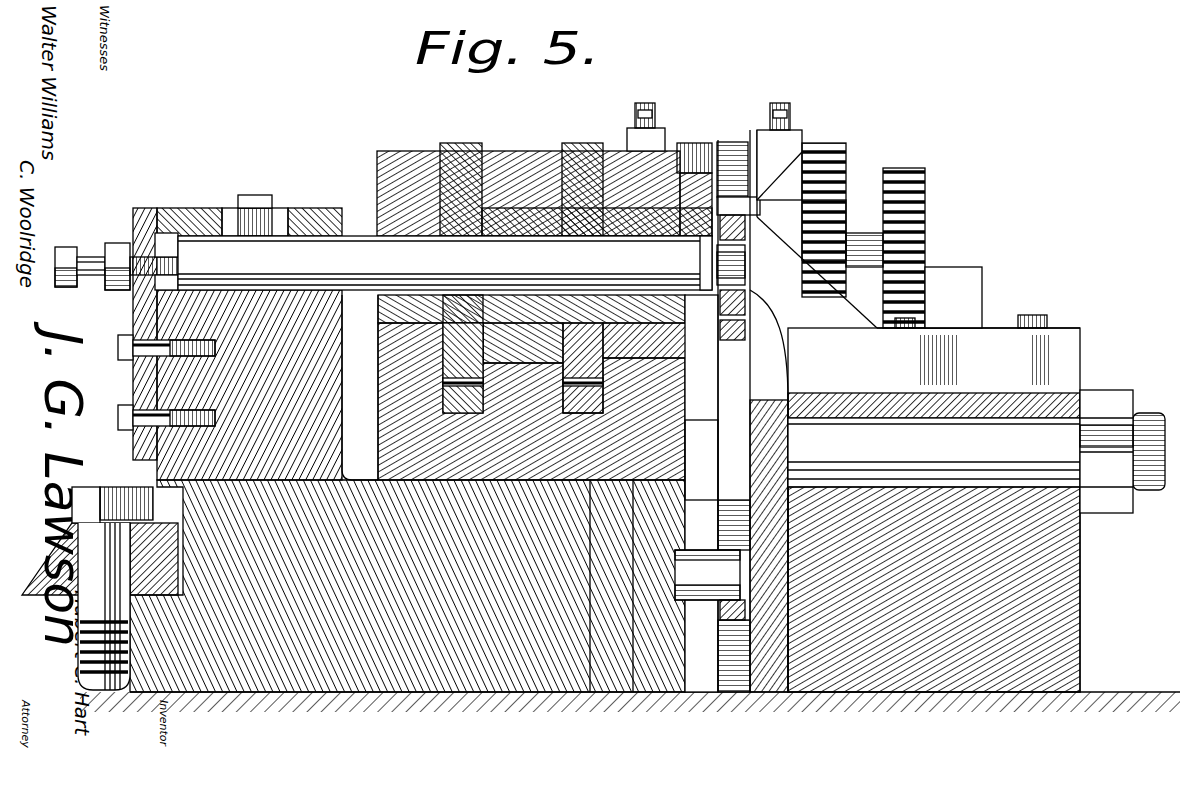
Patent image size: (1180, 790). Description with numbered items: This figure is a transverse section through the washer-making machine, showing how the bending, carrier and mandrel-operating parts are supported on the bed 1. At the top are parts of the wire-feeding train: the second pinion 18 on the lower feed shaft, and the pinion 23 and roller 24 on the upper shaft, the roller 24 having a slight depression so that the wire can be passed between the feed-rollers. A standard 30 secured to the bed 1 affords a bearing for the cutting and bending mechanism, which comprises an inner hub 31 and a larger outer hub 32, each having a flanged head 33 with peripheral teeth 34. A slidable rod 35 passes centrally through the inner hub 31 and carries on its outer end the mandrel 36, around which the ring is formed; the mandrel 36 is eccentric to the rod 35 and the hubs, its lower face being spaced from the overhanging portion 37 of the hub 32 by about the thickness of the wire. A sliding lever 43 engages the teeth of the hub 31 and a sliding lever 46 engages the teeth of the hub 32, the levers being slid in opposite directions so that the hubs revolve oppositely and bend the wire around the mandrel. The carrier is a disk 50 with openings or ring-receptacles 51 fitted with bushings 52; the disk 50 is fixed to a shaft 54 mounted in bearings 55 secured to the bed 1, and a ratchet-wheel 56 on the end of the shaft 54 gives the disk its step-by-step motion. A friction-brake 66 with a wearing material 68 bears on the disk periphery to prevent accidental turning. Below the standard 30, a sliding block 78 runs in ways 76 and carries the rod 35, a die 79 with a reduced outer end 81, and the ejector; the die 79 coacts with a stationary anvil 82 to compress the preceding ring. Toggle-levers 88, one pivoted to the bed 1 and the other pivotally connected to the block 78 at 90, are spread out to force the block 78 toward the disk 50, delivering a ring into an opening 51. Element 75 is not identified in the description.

The bed 1 is at (572, 694).
The second pinion 18 is at (866, 240).
The pinion 23 is at (849, 162).
The roller 24 is at (730, 140).
The standard 30 is at (516, 162).
The inner hub 31 is at (570, 232).
The outer hub 32 is at (648, 208).
The flanged head 33 is at (460, 150).
The peripheral teeth 34 is at (440, 372).
The slidable rod 35 is at (362, 243).
The mandrel 36 is at (702, 260).
The overhanging portion 37 is at (698, 145).
The sliding lever 43 is at (405, 425).
The sliding lever 46 is at (655, 432).
The disk 50 is at (701, 493).
The openings or ring-receptacles 51 is at (728, 316).
The bushings 52 is at (733, 330).
The shaft 54 is at (976, 451).
The bearings 55 is at (1035, 396).
The ratchet-wheel 56 is at (1105, 398).
The friction-brake 66 is at (806, 152).
The wearing material 68 is at (825, 196).
The gear 75 is at (926, 190).
The ways 76 is at (930, 278).
The sliding block 78 is at (476, 694).
The die 79 is at (707, 575).
The reduced outer end 81 is at (727, 606).
The stationary anvil 82 is at (765, 694).
The toggle-levers 88 is at (70, 526).
The pivot 90 is at (97, 493).